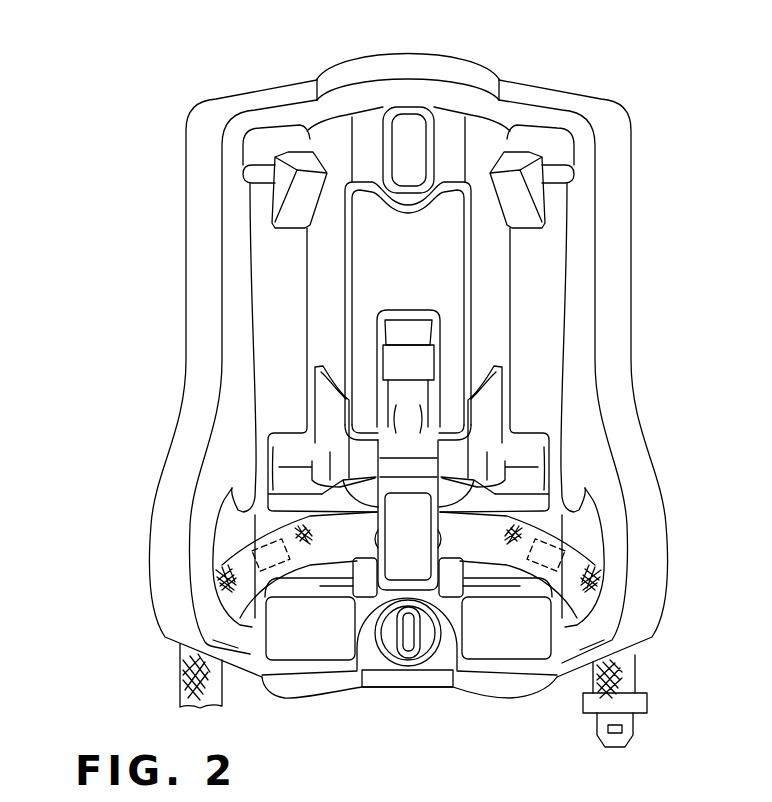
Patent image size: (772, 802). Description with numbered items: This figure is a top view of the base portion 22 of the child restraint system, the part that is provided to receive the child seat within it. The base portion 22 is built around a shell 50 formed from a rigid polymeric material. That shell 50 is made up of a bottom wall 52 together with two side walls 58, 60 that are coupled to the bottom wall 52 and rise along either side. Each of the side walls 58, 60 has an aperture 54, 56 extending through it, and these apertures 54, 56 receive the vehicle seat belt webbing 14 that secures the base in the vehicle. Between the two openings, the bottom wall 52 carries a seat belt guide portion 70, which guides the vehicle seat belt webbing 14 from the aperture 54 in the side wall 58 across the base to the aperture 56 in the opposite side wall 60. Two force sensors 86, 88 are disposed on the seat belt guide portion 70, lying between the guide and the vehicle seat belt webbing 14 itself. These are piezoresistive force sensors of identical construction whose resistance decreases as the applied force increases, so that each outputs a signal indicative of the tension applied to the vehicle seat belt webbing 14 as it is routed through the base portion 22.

The vehicle seat belt webbing 14 is at (630, 665).
The base portion 22 is at (158, 78).
The shell 50 is at (598, 104).
The bottom wall 52 is at (268, 142).
The aperture 54 is at (600, 518).
The aperture 56 is at (218, 512).
The side wall 58 is at (630, 397).
The side wall 60 is at (186, 394).
The seat belt guide portion 70 is at (330, 567).
The force sensor 86 is at (567, 527).
The force sensor 88 is at (250, 527).